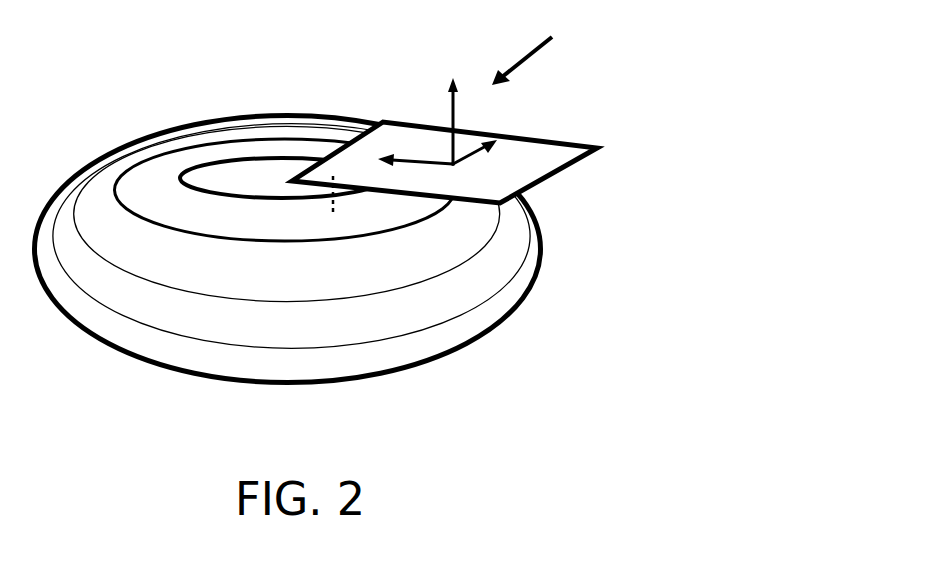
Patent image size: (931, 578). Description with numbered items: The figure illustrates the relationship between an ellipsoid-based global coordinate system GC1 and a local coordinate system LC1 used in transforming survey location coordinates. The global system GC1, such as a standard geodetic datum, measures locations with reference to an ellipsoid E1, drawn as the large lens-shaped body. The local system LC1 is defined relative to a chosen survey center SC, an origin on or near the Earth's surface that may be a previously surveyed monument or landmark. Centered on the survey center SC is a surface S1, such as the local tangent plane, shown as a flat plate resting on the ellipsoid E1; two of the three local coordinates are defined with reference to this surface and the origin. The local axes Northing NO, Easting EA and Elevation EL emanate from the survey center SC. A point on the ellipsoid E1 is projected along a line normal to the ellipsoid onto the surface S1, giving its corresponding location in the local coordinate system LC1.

The ellipsoid E1 is at (477, 283).
The global coordinate system GC1 is at (285, 216).
The surface S1 is at (503, 167).
The survey center SC is at (452, 178).
The Elevation EL is at (466, 115).
The Northing NO is at (415, 150).
The Easting EA is at (489, 139).
The local coordinate system LC1 is at (547, 46).